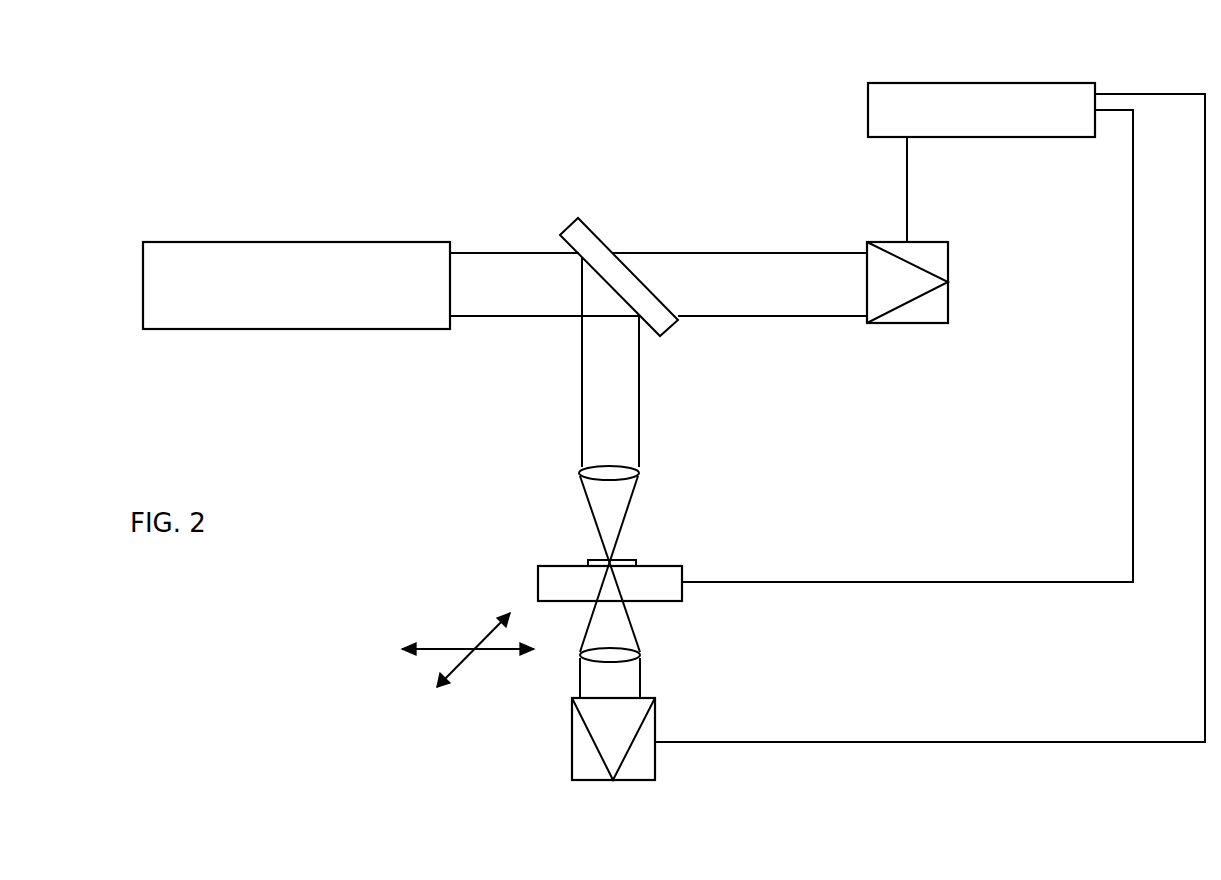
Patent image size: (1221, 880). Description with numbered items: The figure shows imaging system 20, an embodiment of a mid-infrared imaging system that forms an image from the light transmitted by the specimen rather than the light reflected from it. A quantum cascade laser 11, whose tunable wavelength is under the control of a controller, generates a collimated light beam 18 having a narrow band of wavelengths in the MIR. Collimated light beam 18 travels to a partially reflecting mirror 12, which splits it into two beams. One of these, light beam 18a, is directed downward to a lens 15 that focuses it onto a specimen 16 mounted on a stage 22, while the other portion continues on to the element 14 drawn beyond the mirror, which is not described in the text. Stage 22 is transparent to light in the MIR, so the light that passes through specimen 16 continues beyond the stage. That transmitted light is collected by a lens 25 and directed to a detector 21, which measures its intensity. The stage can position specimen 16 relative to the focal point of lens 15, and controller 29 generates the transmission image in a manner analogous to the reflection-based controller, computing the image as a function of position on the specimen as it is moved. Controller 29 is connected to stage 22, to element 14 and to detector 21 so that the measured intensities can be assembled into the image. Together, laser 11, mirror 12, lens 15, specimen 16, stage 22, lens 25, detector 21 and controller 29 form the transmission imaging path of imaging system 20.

The imaging system 20 is at (288, 115).
The quantum cascade laser 11 is at (293, 330).
The collimated light beam 18 is at (500, 258).
The light beam 18a is at (587, 378).
The partially reflecting mirror 12 is at (665, 337).
The detector 14 is at (946, 306).
The controller 29 is at (1025, 139).
The lens 15 is at (640, 477).
The specimen 16 is at (594, 560).
The stage 22 is at (540, 577).
The lens 25 is at (641, 657).
The detector 21 is at (573, 762).